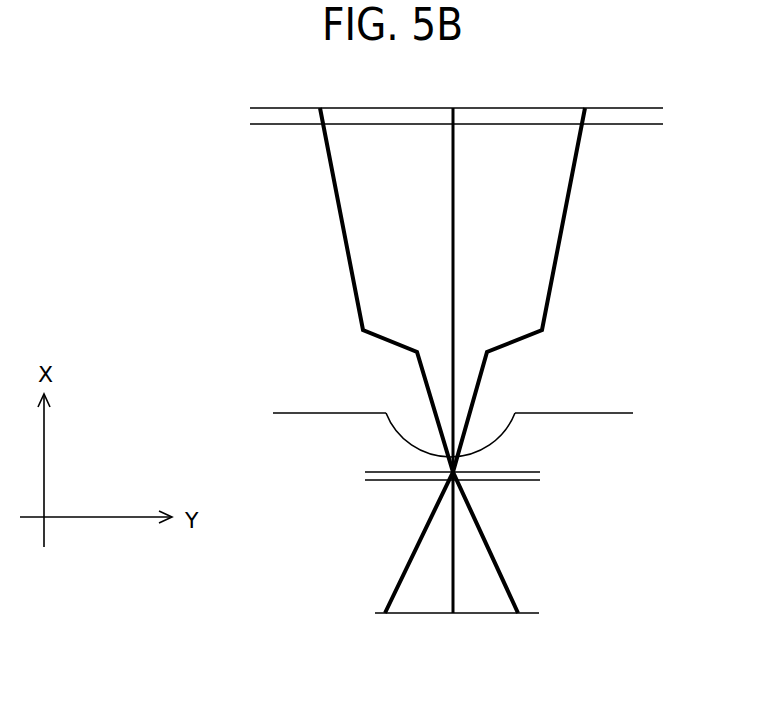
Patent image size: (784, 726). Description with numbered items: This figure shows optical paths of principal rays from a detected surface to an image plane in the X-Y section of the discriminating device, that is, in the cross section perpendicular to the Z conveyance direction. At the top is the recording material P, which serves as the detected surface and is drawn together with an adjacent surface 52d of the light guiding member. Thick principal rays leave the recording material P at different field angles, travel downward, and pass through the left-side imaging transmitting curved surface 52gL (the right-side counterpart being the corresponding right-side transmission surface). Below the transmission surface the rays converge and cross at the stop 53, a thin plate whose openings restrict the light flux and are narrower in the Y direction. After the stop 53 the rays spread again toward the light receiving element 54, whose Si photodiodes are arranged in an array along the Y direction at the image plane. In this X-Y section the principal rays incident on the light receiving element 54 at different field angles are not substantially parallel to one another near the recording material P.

The recording material P is at (302, 108).
The diffusion surface 52d is at (628, 124).
The left-side imaging transmitting curved surface 52gL is at (508, 432).
The stop 53 is at (378, 482).
The light receiving element 54 is at (400, 613).